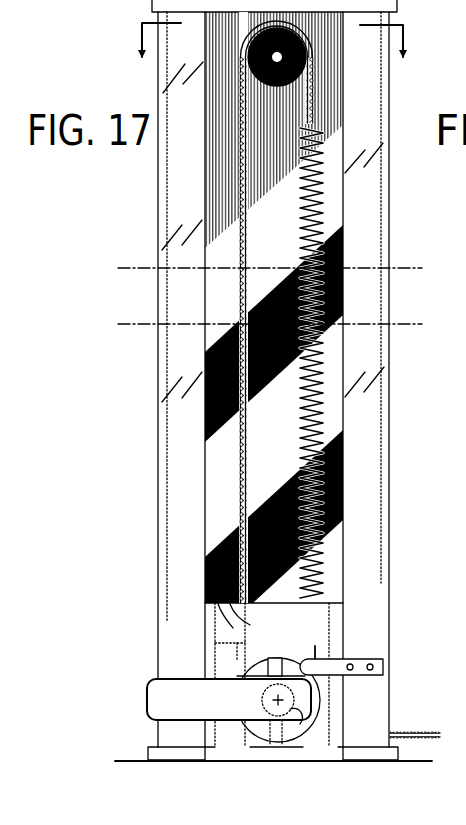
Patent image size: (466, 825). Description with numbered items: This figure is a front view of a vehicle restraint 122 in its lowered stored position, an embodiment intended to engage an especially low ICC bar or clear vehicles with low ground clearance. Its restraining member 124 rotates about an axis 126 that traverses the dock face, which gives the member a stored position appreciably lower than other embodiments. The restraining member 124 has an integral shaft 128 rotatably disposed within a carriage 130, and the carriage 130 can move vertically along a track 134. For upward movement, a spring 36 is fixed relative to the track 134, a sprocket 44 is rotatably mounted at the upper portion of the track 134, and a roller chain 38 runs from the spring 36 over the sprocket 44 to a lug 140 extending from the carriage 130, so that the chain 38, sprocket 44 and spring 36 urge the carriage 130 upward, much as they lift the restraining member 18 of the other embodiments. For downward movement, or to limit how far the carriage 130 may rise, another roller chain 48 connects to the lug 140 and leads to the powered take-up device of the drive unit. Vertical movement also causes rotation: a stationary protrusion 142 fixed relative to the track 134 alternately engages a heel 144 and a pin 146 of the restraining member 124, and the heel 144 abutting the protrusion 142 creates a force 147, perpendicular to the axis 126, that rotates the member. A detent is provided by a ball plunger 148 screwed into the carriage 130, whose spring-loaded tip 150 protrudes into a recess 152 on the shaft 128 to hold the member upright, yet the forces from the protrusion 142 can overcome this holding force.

The restraining member 18 is at (273, 54).
The spring 36 is at (300, 426).
The roller chain 38 is at (247, 250).
The sprocket 44 is at (312, 50).
The roller chain 48 is at (240, 653).
The vehicle restraint 122 is at (127, 247).
The restraining member 124 is at (146, 697).
The axis 126 is at (276, 699).
The integral shaft 128 is at (263, 697).
The carriage 130 is at (333, 603).
The track 134 is at (158, 423).
The lug 140 is at (205, 584).
The stationary protrusion 142 is at (322, 674).
The heel 144 is at (314, 660).
The pin 146 is at (268, 662).
The force 147 is at (318, 652).
The ball plunger 148 is at (286, 729).
The spring-loaded tip 150 is at (273, 751).
The recess 152 is at (300, 684).